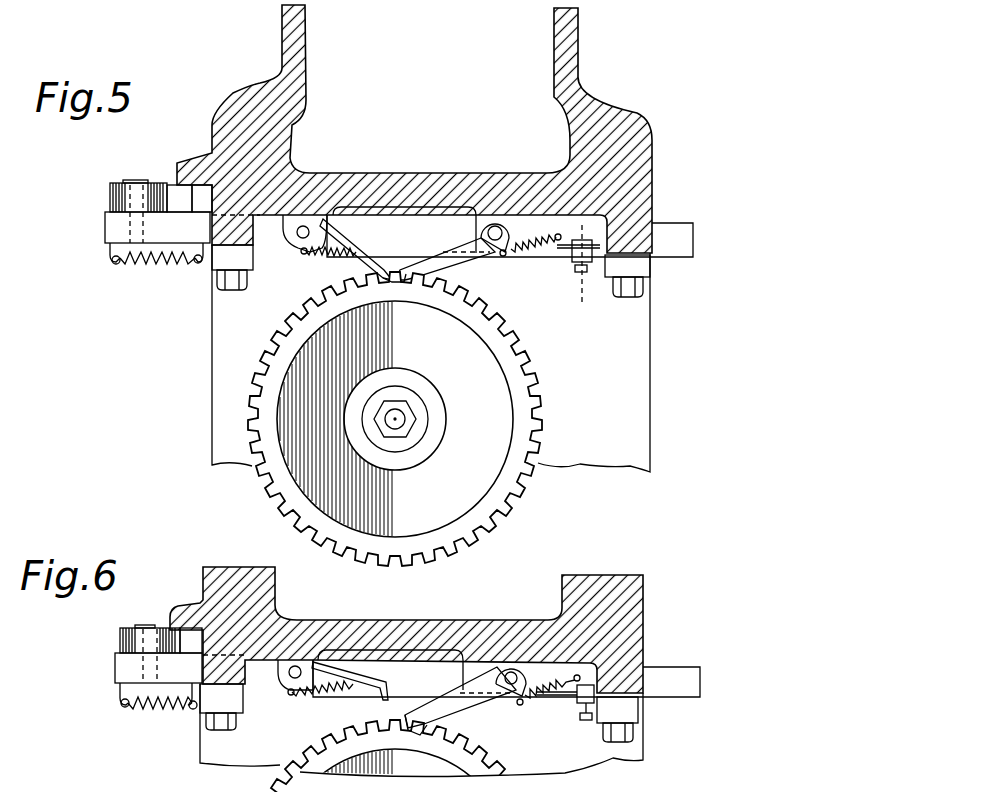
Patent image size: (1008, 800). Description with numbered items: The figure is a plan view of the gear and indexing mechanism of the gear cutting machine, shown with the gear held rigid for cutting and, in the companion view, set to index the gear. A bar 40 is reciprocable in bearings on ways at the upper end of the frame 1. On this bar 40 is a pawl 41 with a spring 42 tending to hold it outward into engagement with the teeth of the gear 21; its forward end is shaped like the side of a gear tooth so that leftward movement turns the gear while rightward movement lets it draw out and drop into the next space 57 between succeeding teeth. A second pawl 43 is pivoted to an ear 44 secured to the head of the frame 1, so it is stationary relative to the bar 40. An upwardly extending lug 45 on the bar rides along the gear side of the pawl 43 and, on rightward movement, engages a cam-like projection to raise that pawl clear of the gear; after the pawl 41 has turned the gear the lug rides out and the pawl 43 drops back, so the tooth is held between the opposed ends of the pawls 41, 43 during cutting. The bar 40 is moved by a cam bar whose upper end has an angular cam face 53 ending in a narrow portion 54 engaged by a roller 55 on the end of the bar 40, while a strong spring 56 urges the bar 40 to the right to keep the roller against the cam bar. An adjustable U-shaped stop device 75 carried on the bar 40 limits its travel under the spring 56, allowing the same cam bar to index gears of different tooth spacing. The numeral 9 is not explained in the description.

In FIG. 5, the frame 1 is at (592, 95).
In FIG. 6, the frame 1 is at (643, 612).
In FIG. 5, the spring rod 9 is at (555, 268).
In FIG. 5, the gear 21 is at (395, 419).
In FIG. 6, the gear 21 is at (395, 760).
In FIG. 5, the bar 40 is at (415, 227).
In FIG. 6, the bar 40 is at (420, 667).
In FIG. 5, the pawl 41 is at (447, 253).
In FIG. 6, the pawl 41 is at (480, 674).
In FIG. 5, the spring 42 is at (506, 252).
In FIG. 6, the spring 42 is at (521, 705).
In FIG. 5, the second pawl 43 is at (350, 240).
In FIG. 6, the second pawl 43 is at (356, 673).
In FIG. 5, the ear 44 is at (290, 228).
In FIG. 6, the ear 44 is at (298, 660).
In FIG. 5, the lug 45 is at (304, 256).
In FIG. 6, the lug 45 is at (294, 697).
In FIG. 5, the angular cam face 53 is at (178, 192).
In FIG. 5, the narrow portion 54 is at (202, 205).
In FIG. 6, the narrow portion 54 is at (195, 648).
In FIG. 5, the roller 55 is at (110, 200).
In FIG. 6, the roller 55 is at (120, 638).
In FIG. 5, the spring 56 is at (144, 266).
In FIG. 6, the spring 56 is at (150, 708).
In FIG. 5, the space between teeth 57 is at (401, 280).
In FIG. 6, the space between teeth 57 is at (428, 730).
In FIG. 5, the adjustable stop device 75 is at (578, 264).
In FIG. 6, the adjustable stop device 75 is at (583, 705).